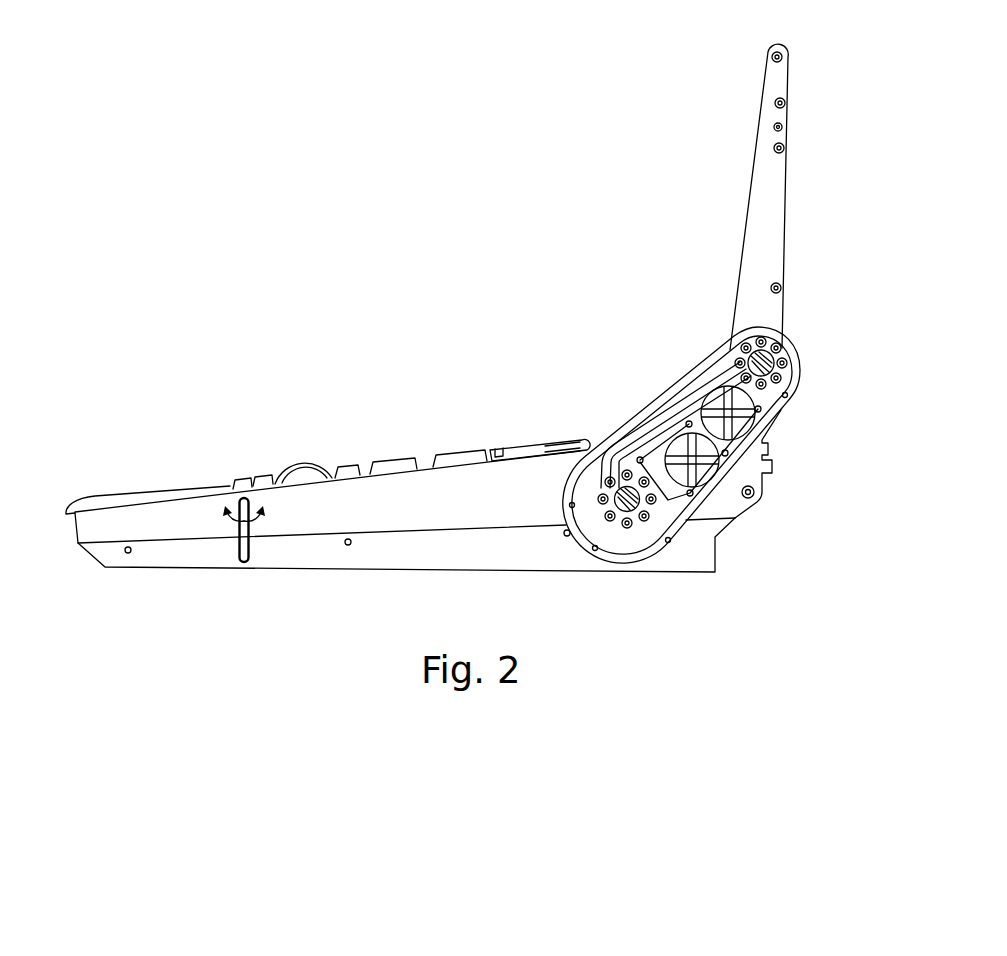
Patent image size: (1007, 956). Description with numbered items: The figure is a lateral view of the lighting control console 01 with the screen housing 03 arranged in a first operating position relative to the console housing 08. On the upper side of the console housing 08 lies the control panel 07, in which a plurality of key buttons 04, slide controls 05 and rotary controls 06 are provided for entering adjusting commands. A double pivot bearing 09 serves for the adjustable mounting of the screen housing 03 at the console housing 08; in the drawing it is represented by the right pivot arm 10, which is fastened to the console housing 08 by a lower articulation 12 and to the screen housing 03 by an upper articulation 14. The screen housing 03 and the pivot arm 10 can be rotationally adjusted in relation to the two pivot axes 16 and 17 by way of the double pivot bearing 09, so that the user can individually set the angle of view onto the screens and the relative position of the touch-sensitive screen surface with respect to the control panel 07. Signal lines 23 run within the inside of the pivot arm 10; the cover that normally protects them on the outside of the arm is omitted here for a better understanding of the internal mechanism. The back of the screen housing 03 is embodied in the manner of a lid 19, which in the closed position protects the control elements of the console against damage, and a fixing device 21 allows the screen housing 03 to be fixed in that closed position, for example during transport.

The lighting control console 01 is at (333, 195).
The screen housing 03 is at (773, 193).
The key buttons 04 is at (422, 463).
The slide controls 05 is at (390, 467).
The rotary controls 06 is at (545, 437).
The control panel 07 is at (229, 484).
The console housing 08 is at (412, 542).
The double pivot bearing 09 is at (672, 346).
The right pivot arm 10 is at (777, 430).
The lower articulation 12 is at (636, 520).
The upper articulation 14 is at (787, 347).
The pivot axis 16 is at (777, 327).
The pivot axis 17 is at (632, 462).
The lid 19 is at (795, 222).
The fixing device 21 is at (250, 522).
The signal lines 23 is at (707, 377).